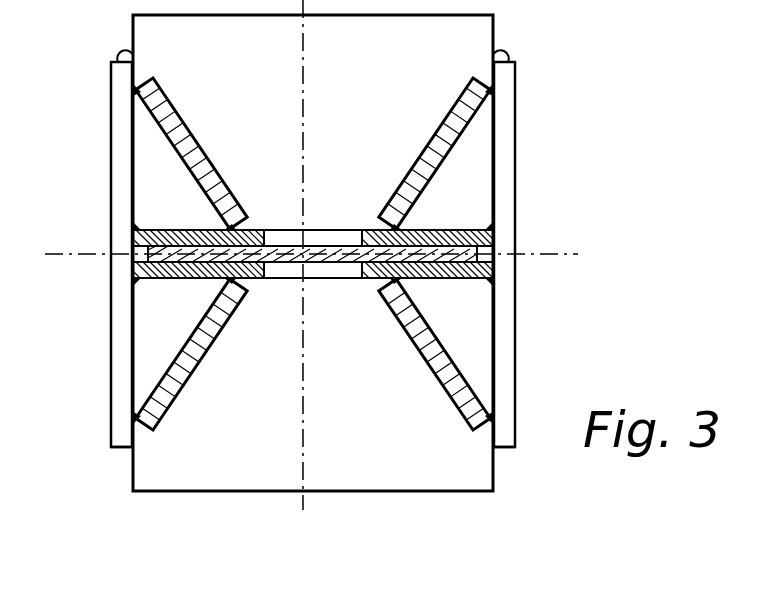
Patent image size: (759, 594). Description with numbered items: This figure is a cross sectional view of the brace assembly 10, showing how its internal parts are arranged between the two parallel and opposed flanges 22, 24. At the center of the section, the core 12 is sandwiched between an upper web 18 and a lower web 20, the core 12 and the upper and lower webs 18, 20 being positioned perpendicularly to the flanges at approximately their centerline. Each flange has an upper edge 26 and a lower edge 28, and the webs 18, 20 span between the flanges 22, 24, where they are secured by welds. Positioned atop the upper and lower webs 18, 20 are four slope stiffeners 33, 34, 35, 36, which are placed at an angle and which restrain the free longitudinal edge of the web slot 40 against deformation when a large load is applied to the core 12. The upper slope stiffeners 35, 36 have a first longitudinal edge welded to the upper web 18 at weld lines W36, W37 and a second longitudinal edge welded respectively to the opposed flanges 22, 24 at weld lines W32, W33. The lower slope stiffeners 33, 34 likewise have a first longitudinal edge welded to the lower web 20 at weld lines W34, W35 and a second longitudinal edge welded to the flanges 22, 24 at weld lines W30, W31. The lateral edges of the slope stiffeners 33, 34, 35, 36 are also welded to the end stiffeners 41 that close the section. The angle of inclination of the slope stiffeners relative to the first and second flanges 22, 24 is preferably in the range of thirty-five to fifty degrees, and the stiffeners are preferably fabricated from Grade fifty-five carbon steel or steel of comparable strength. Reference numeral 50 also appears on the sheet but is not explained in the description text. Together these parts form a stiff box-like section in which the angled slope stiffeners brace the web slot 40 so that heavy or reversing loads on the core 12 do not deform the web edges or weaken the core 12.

The brace assembly 10 is at (197, 590).
The core 12 is at (492, 258).
The upper web 18 is at (348, 242).
The lower web 20 is at (358, 266).
The flange 22 is at (111, 157).
The flange 24 is at (515, 134).
The upper edge 26 is at (135, 53).
The lower edge 28 is at (118, 449).
The slope stiffener 33 is at (420, 360).
The slope stiffener 34 is at (205, 370).
The slope stiffener 35 is at (197, 142).
The slope stiffener 36 is at (438, 123).
The web slot 40 is at (390, 590).
The end stiffener 41 is at (133, 30).
The mount 50 is at (262, 590).
The weld line W30 is at (493, 416).
The weld line W31 is at (133, 416).
The weld line W32 is at (133, 88).
The weld line W33 is at (493, 88).
The weld line W34 is at (400, 282).
The weld line W35 is at (222, 282).
The weld line W36 is at (225, 228).
The weld line W37 is at (400, 228).